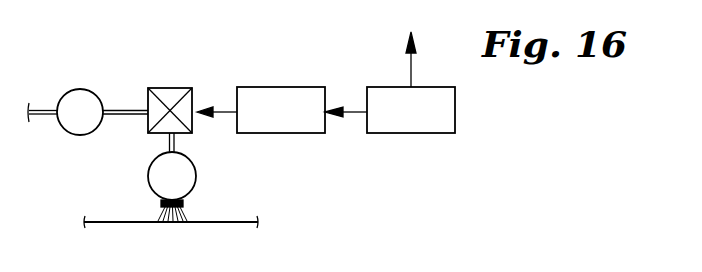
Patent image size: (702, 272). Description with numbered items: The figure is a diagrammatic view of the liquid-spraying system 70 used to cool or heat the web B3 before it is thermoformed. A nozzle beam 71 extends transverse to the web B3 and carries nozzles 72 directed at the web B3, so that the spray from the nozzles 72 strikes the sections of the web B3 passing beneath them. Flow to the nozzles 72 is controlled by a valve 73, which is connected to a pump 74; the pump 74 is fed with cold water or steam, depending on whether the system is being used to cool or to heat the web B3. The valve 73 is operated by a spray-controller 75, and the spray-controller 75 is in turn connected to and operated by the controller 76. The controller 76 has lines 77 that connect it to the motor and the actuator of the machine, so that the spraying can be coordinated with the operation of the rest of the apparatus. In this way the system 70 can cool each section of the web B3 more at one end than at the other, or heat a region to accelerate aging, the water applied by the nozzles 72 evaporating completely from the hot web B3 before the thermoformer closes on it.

The spray coating system 70 is at (375, 173).
The nozzle beam 71 is at (157, 168).
The nozzle 72 is at (186, 212).
The valve 73 is at (176, 98).
The pump 74 is at (80, 98).
The spray-controller 75 is at (274, 97).
The controller 76 is at (455, 113).
The line 77 is at (414, 60).
The web B3 is at (103, 222).